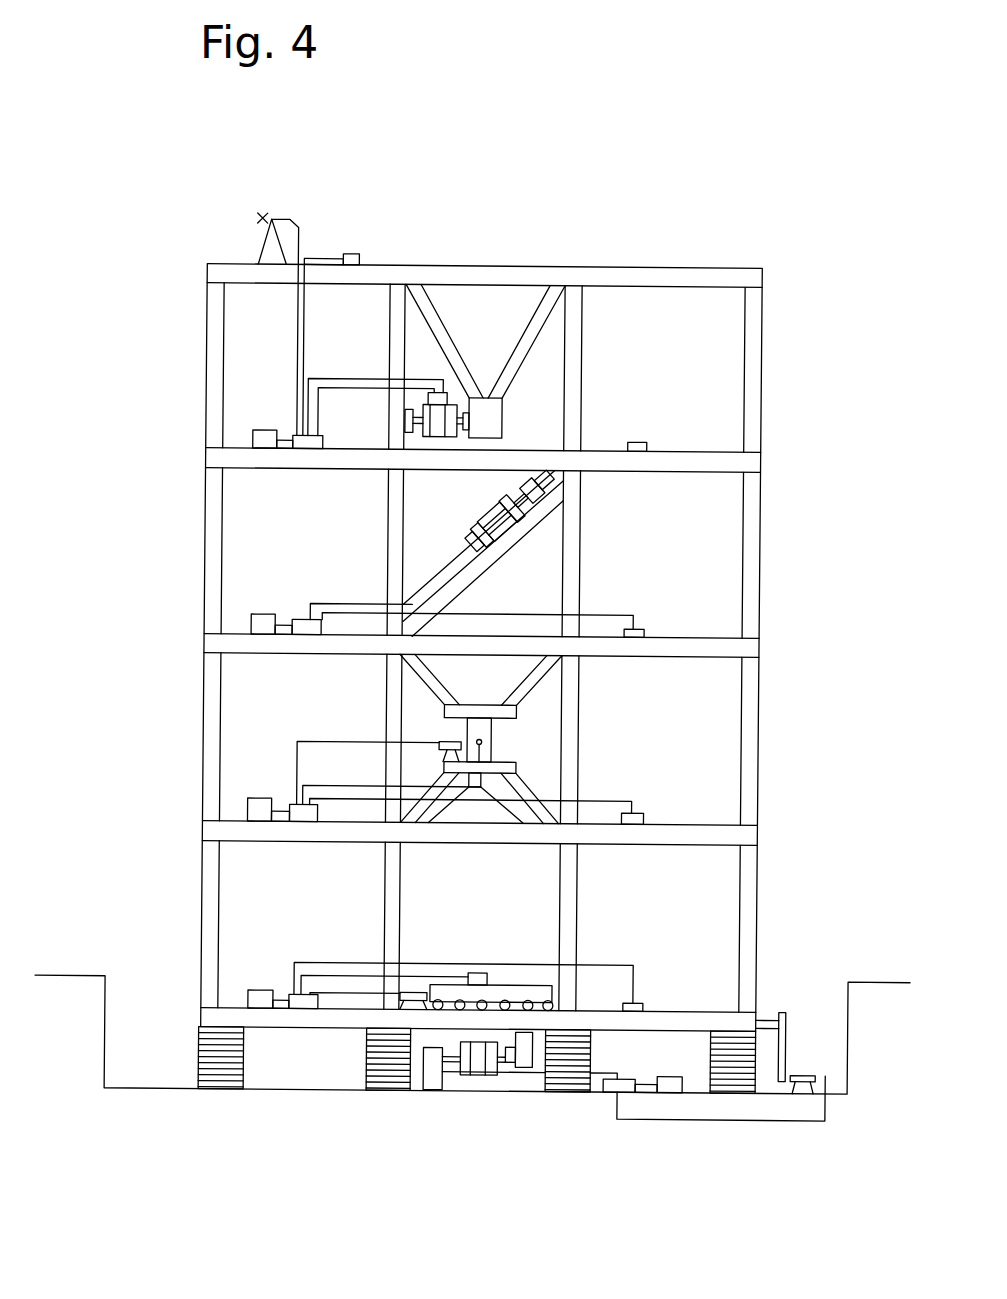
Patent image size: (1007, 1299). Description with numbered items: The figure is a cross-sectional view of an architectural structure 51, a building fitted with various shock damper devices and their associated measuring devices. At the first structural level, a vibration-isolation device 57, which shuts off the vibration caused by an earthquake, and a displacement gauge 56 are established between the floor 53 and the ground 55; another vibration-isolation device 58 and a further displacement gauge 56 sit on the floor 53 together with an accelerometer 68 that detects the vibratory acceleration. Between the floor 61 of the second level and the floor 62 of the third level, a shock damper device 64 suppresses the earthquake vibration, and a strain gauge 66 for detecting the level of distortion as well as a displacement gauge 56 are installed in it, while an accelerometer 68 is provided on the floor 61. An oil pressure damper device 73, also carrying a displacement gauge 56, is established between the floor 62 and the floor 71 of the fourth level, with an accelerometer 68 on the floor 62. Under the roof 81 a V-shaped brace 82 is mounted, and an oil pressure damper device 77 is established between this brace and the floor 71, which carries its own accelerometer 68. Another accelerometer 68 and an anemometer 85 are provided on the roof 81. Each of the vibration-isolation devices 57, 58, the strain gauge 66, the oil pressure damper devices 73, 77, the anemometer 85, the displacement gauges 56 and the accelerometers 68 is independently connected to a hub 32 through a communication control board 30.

The communication control board 30 is at (308, 450).
The hub 32 is at (265, 431).
The architectural structure 51 is at (699, 221).
The floor 53 is at (711, 1010).
The ground 55 is at (148, 1091).
The displacement gauge 56 is at (465, 527).
The vibration-isolation device 57 is at (395, 1096).
The vibration-isolation device 58 is at (487, 953).
The floor 61 is at (706, 824).
The floor 62 is at (700, 636).
The shock damper device 64 is at (490, 730).
The strain gauge 66 is at (485, 743).
The accelerometer 68 is at (352, 255).
The floor 71 is at (722, 450).
The oil pressure damper device 73 is at (501, 497).
The oil pressure damper device 77 is at (474, 424).
The roof 81 is at (505, 266).
The V-shaped brace 82 is at (525, 338).
The anemometer 85 is at (243, 222).